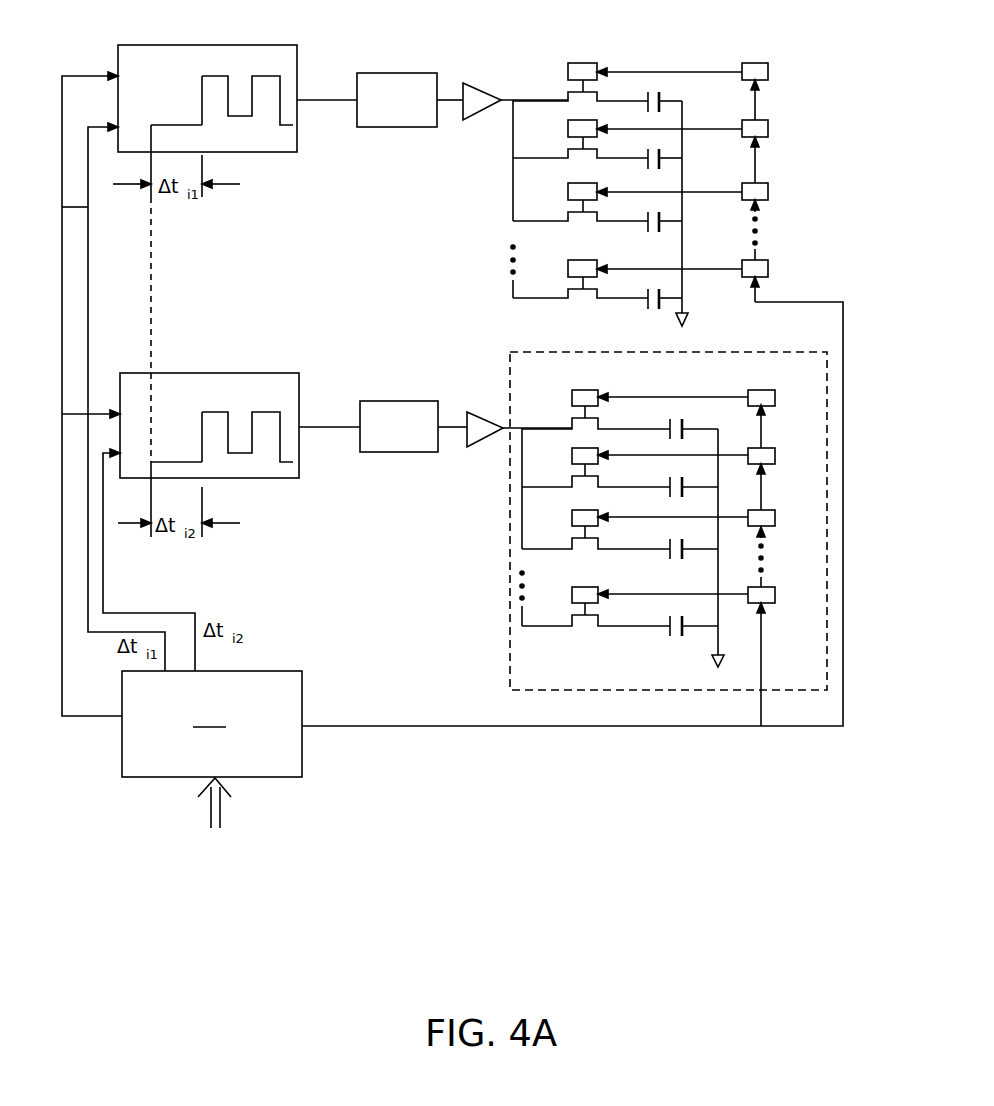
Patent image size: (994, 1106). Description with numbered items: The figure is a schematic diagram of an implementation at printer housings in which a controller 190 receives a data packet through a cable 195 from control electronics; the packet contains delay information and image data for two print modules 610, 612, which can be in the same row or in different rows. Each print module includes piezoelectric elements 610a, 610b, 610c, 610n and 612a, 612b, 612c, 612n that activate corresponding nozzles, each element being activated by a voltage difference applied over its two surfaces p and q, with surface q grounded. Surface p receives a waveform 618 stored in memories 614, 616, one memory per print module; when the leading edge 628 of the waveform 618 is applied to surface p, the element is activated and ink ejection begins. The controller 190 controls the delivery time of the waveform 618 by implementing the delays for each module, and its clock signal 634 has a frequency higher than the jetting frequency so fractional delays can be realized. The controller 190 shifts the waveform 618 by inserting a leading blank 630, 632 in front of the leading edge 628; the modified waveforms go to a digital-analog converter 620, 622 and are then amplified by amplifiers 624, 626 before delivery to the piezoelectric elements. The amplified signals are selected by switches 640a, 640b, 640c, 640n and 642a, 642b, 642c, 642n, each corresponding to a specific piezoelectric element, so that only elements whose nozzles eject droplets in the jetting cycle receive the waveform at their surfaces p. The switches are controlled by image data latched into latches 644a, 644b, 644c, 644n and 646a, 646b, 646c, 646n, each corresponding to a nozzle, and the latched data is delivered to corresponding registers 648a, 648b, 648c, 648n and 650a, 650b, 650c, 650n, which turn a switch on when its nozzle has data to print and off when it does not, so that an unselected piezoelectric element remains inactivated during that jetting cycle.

The controller 190 is at (482, 539).
The cable 195 is at (222, 810).
The print module 610 is at (672, 50).
The piezoelectric element 610a is at (664, 101).
The piezoelectric element 610b is at (664, 158).
The piezoelectric element 610c is at (664, 221).
The piezoelectric element 610n is at (664, 298).
The print module 612 is at (722, 352).
The piezoelectric element 612a is at (683, 424).
The piezoelectric element 612b is at (684, 486).
The piezoelectric element 612c is at (691, 540).
The piezoelectric element 612n is at (692, 616).
The memory 614 is at (272, 153).
The memory 616 is at (258, 373).
The waveform 618 is at (258, 75).
The digital-analog converter 620 is at (390, 73).
The digital-analog converter 622 is at (395, 401).
The amplifier 624 is at (463, 86).
The amplifier 626 is at (470, 413).
The leading edge 628 is at (201, 92).
The leading blank 630 is at (178, 124).
The leading blank 632 is at (176, 461).
The clock signal 634 is at (62, 362).
The switch 640a is at (567, 97).
The switch 640b is at (567, 156).
The switch 640c is at (567, 216).
The switch 640n is at (567, 290).
The switch 642a is at (571, 423).
The switch 642b is at (571, 480).
The switch 642c is at (571, 541).
The switch 642n is at (572, 618).
The latch 644a is at (767, 63).
The latch 644b is at (767, 120).
The latch 644c is at (767, 183).
The latch 644n is at (767, 260).
The latch 646a is at (767, 390).
The latch 646b is at (775, 450).
The latch 646c is at (790, 506).
The latch 646n is at (790, 580).
The register 648a is at (576, 63).
The register 648b is at (571, 123).
The register 648c is at (572, 186).
The register 648n is at (575, 260).
The register 650a is at (580, 390).
The register 650b is at (576, 448).
The register 650c is at (580, 510).
The register 650n is at (580, 587).